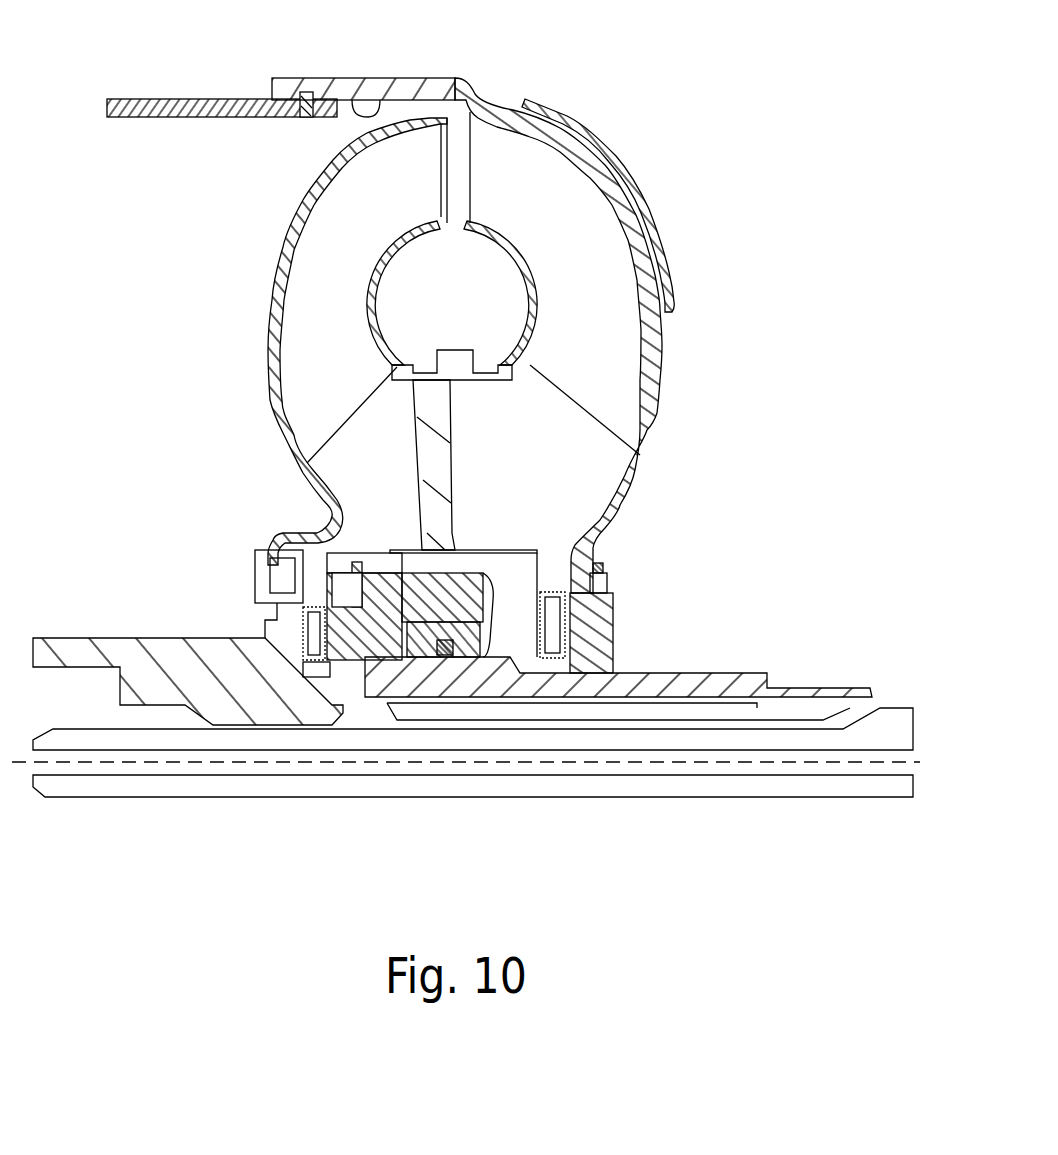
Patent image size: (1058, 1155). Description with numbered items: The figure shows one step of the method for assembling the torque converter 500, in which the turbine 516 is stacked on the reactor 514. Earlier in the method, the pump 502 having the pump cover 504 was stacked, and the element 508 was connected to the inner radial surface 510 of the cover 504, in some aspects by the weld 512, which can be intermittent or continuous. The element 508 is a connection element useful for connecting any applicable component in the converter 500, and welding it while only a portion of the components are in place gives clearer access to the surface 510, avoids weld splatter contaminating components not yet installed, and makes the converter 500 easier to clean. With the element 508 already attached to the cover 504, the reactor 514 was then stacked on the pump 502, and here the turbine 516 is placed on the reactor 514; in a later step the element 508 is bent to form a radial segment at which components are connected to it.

The torque converter 500 is at (668, 128).
The pump 502 is at (593, 370).
The pump cover 504 is at (630, 240).
The element 508 is at (200, 103).
The inner radial surface 510 is at (425, 88).
The weld 512 is at (306, 118).
The reactor 514 is at (497, 567).
The turbine 516 is at (310, 340).